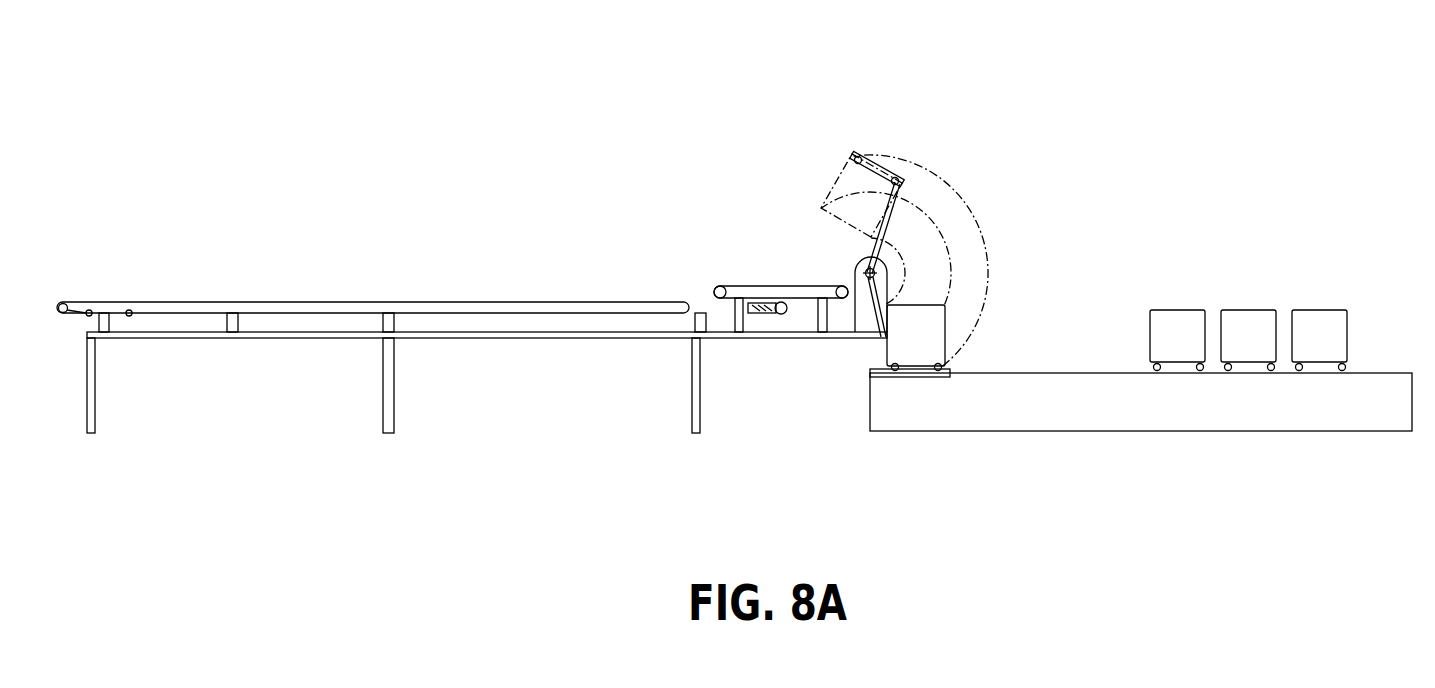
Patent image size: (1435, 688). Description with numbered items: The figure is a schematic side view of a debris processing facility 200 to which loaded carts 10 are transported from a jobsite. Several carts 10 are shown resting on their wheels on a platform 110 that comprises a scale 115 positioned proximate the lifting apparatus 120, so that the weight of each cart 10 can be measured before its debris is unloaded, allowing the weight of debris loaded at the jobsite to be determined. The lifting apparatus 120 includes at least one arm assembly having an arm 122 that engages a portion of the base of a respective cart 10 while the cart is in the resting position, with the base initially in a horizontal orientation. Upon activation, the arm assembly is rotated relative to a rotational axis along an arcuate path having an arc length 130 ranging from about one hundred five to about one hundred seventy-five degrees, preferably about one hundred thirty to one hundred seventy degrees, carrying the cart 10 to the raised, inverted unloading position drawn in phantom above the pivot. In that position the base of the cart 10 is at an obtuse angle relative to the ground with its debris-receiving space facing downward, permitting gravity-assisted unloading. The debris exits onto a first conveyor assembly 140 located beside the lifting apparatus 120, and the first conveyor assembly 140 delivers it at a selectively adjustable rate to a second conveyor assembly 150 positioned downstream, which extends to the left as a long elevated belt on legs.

The debris processing facility 200 is at (172, 65).
The second conveyor assembly 150 is at (258, 302).
The first conveyor assembly 140 is at (731, 286).
The lifting apparatus 120 is at (863, 314).
The arm 122 is at (943, 178).
The arc length 130 is at (956, 214).
The cart 10 is at (847, 180).
The scale 115 is at (912, 378).
The platform 110 is at (1125, 373).